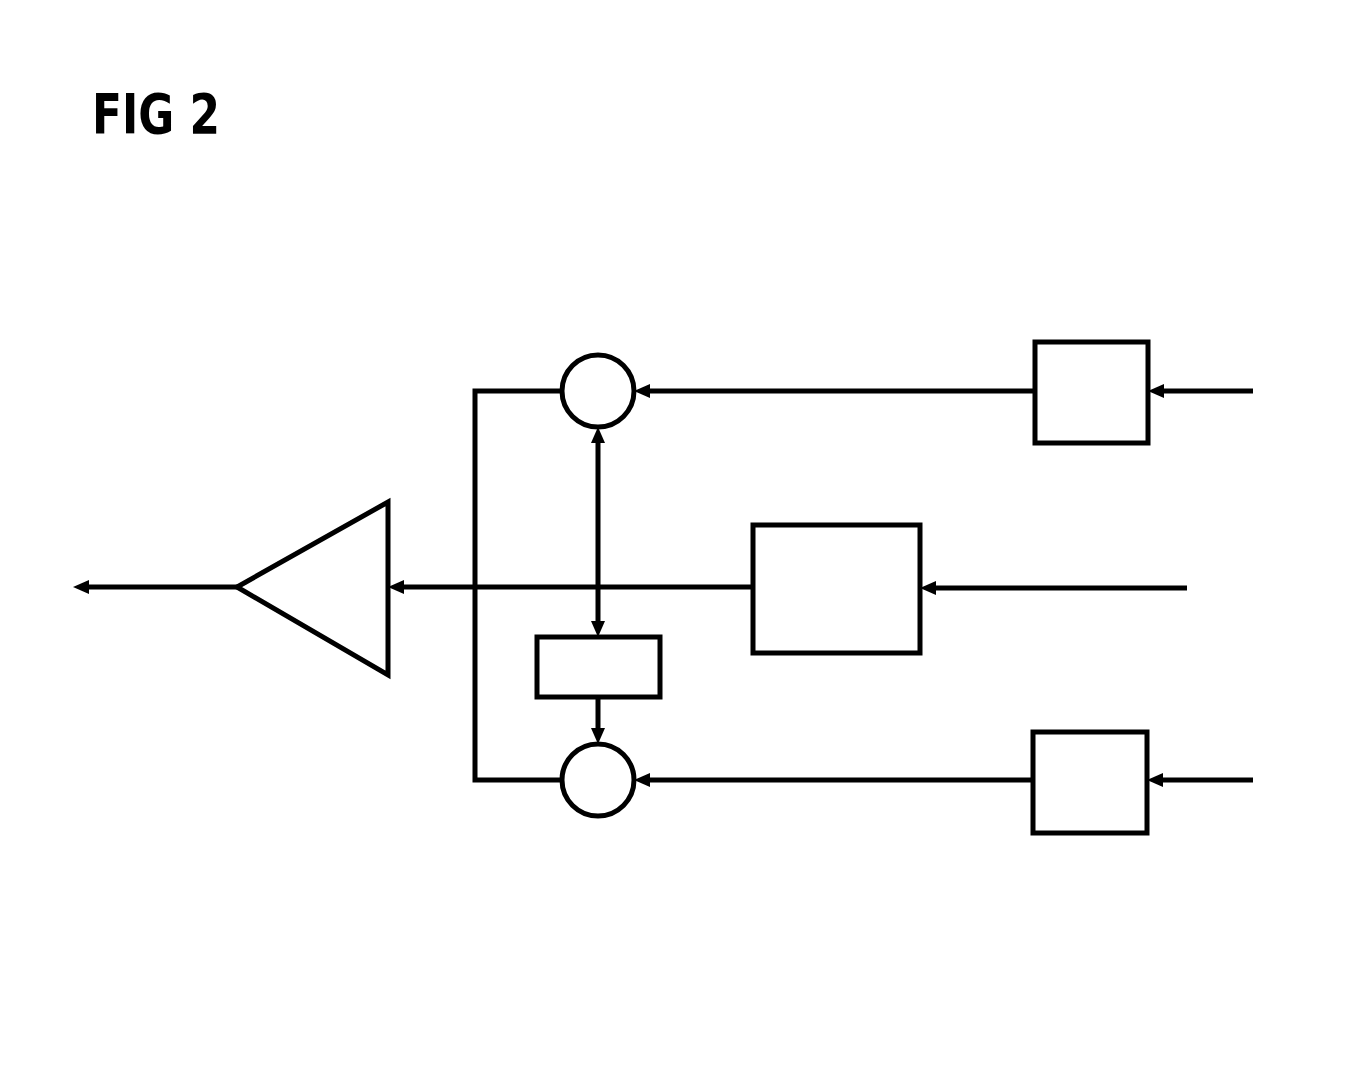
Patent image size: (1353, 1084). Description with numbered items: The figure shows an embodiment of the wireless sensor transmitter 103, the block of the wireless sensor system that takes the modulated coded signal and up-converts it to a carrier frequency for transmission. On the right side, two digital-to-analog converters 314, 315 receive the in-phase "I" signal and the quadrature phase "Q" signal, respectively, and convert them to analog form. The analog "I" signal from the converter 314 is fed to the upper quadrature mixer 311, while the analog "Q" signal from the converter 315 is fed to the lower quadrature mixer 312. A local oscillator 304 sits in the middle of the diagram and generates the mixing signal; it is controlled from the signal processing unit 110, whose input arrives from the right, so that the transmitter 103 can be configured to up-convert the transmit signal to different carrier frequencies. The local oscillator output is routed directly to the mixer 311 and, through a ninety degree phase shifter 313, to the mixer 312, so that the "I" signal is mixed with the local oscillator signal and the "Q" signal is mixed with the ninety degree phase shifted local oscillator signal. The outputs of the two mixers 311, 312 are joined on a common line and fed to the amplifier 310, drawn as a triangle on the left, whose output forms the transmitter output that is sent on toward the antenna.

The wireless sensor transmitter 103 is at (663, 437).
The amplifier 310 is at (320, 535).
The quadrature mixer 311 is at (595, 353).
The quadrature mixer 312 is at (575, 808).
The 90 degree phase shifter 313 is at (660, 671).
The local oscillator 304 is at (920, 540).
The digital-to-analog (D/A) converter 314 is at (1085, 342).
The digital-to-analog (D/A) converter 315 is at (1083, 732).
The signal processing unit 110 is at (1251, 602).